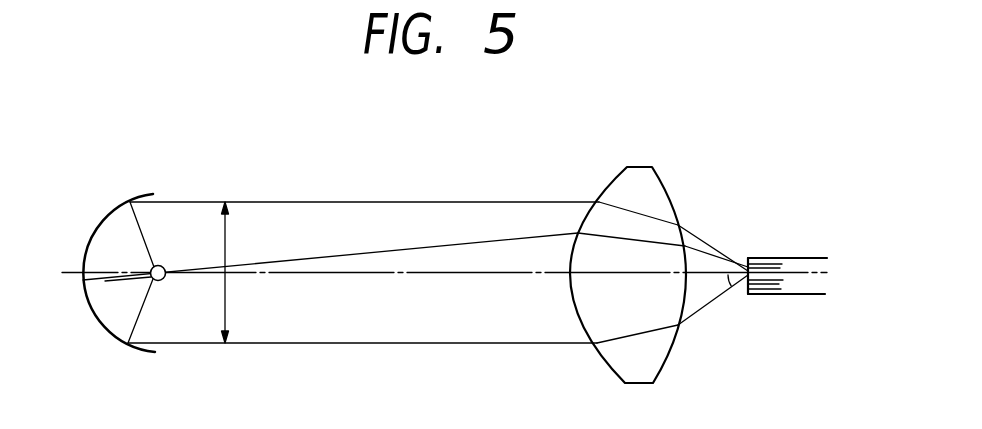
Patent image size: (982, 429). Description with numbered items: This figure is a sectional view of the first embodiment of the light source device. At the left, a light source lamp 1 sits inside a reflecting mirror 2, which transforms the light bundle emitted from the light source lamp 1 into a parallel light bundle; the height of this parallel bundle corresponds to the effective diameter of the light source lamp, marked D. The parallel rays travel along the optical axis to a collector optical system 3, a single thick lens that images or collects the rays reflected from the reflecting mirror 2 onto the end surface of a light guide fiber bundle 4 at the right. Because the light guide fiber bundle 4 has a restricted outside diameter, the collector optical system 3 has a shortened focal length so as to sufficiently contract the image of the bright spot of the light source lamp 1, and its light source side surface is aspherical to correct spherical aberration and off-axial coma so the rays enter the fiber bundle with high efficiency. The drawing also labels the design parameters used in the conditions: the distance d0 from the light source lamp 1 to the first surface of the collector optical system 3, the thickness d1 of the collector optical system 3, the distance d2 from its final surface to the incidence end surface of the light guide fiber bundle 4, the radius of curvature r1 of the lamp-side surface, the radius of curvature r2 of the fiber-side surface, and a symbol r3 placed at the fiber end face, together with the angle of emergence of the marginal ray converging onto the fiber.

The light source lamp 1 is at (167, 264).
The reflecting mirror 2 is at (110, 213).
The collector optical system 3 is at (641, 165).
The light guide fiber bundle 4 is at (797, 257).
The effective diameter of the light source lamp D is at (223, 288).
The distance from the light source lamp to the first surface of the collector optica d0 is at (343, 275).
The thickness of the collector optical system d1 is at (615, 277).
The distance from the final surface of the collector optical system to the fiber bun d2 is at (708, 280).
The radius of curvature of the first surface of the collector optical system r1 is at (604, 192).
The radius of curvature of the second surface of the collector optical system r2 is at (665, 188).
The fiber end face r3 is at (748, 257).